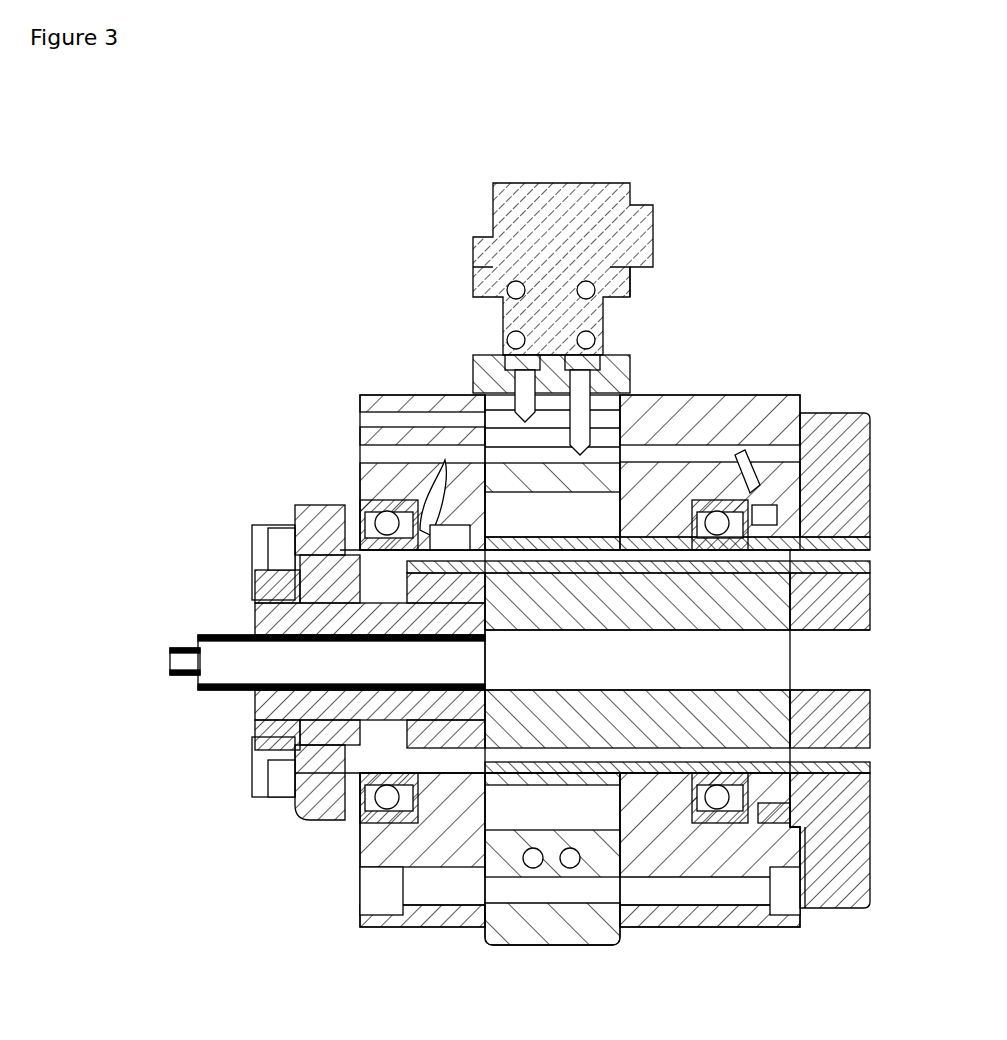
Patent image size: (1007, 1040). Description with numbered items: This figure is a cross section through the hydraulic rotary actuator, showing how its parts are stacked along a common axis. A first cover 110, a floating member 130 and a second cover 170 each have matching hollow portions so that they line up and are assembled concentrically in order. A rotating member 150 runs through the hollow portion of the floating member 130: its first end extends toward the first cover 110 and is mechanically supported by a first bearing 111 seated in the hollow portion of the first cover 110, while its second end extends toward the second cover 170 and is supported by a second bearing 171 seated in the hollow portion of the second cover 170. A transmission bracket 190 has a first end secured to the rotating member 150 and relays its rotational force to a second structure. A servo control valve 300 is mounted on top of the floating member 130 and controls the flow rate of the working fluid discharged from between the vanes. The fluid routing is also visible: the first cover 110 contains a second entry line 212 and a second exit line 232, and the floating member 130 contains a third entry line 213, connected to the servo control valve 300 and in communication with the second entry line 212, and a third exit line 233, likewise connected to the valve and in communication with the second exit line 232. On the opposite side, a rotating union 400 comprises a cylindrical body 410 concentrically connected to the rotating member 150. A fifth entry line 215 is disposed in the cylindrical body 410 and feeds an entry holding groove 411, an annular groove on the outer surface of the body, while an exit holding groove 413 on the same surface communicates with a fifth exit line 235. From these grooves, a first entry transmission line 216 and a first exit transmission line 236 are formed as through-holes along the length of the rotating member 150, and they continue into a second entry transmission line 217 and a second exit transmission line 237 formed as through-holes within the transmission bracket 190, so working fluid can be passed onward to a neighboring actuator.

The servo control valve 300 is at (556, 181).
The third entry line 213 is at (497, 372).
The third exit line 233 is at (606, 372).
The second entry line 212 is at (362, 420).
The second exit line 232 is at (362, 458).
The first cover 110 is at (452, 915).
The first bearing 111 is at (375, 822).
The floating member 130 is at (588, 948).
The second cover 170 is at (663, 912).
The second bearing 171 is at (718, 810).
The transmission bracket 190 is at (870, 835).
The rotating member 150 is at (762, 609).
The first entry transmission line 216 is at (868, 540).
The second entry transmission line 217 is at (855, 569).
The first exit transmission line 236 is at (765, 748).
The second exit transmission line 237 is at (855, 756).
The fifth entry line 215 is at (262, 618).
The fifth exit line 235 is at (262, 712).
The entry holding groove 411 is at (265, 597).
The exit holding groove 413 is at (265, 748).
The rotating union 400 is at (248, 553).
The cylindrical body 410 is at (250, 780).